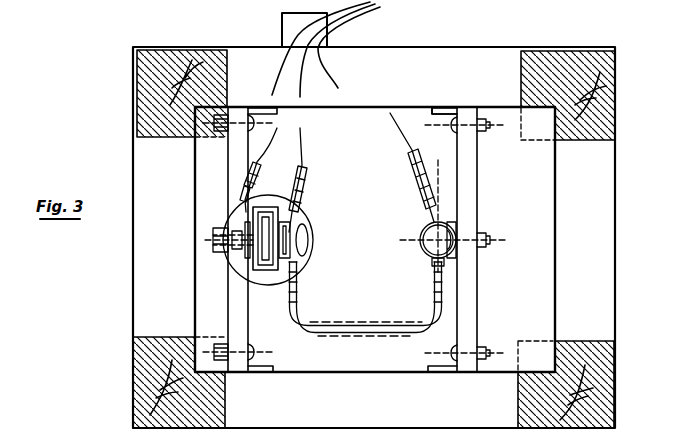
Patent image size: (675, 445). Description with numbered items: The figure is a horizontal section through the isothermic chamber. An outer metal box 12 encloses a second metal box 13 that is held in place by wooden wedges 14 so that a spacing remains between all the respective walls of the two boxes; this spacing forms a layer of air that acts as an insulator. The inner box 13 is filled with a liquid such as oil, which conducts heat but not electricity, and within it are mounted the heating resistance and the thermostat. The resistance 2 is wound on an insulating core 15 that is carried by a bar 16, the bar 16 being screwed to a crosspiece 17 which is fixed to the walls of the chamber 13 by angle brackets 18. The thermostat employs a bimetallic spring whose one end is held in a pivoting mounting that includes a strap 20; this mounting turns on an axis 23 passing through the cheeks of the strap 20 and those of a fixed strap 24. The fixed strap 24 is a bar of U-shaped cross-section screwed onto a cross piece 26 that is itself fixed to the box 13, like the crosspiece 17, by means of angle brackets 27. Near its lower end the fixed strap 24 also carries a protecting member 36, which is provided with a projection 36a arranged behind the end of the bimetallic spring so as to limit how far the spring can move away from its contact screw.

The resistance 2 is at (432, 226).
The outer metal box 12 is at (511, 48).
The second metal box 13 is at (366, 107).
The wooden wedges 14 is at (521, 72).
The insulating core 15 is at (424, 231).
The bar 16 is at (450, 222).
The crosspiece 17 is at (472, 216).
The angle brackets 18 is at (438, 108).
The strap 20 is at (285, 206).
The axis 23 is at (268, 206).
The fixed strap 24 is at (251, 282).
The cross piece 26 is at (231, 155).
The angle brackets 27 is at (262, 106).
The protecting member 36 is at (302, 219).
The projection 36a is at (309, 238).